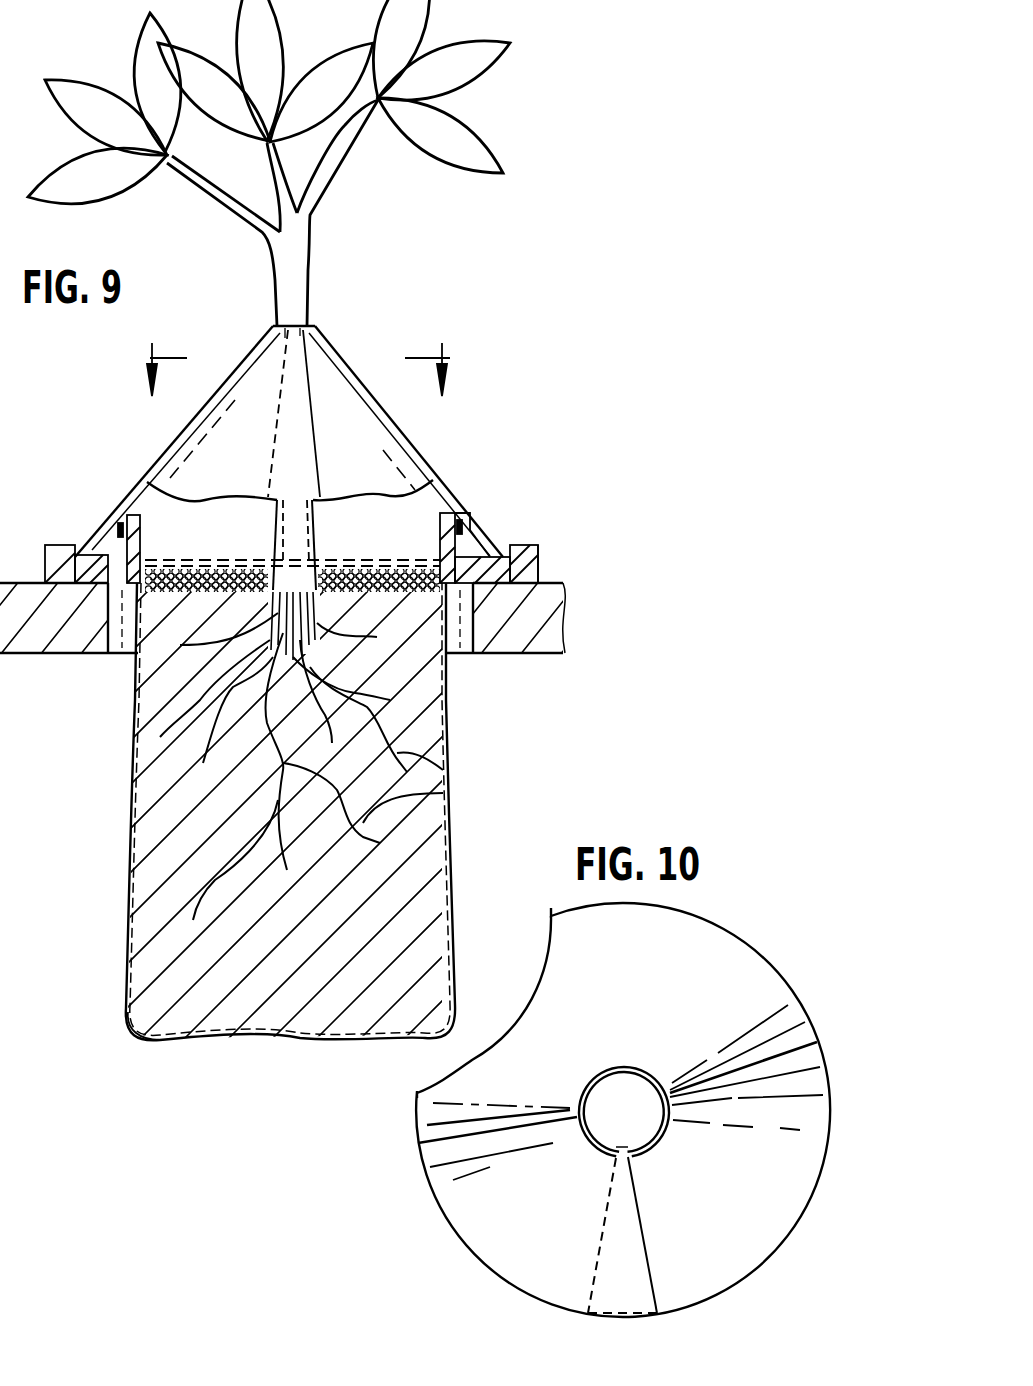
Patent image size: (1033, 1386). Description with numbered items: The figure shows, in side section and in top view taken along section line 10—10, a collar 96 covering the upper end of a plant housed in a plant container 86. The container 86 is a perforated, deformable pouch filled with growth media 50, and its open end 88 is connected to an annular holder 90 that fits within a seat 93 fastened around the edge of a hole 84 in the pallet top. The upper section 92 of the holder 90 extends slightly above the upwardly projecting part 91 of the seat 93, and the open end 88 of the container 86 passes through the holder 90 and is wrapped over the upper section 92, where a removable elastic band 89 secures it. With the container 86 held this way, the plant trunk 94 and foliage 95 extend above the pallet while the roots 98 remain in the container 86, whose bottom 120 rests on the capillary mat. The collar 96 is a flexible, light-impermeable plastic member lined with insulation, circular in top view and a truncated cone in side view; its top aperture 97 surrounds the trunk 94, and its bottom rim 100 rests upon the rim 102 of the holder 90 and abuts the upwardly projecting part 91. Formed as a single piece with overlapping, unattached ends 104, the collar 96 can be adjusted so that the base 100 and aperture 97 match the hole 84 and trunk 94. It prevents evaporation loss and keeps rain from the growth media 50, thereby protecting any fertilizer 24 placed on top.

In FIG. 9, the section line 10— 10 is at (295, 362).
In FIG. 9, the fertilizer 24 is at (228, 570).
In FIG. 9, the growth media 50 is at (185, 962).
In FIG. 9, the hole 84 is at (453, 655).
In FIG. 9, the plant container 86 is at (452, 705).
In FIG. 9, the open end 88 is at (133, 500).
In FIG. 9, the elastic band 89 is at (466, 528).
In FIG. 9, the annular holder 90 is at (430, 522).
In FIG. 9, the upwardly projecting part 91 is at (514, 545).
In FIG. 9, the upper section 92 is at (448, 553).
In FIG. 9, the seat 93 is at (552, 567).
In FIG. 9, the plant trunk 94 is at (276, 298).
In FIG. 9, the foliage 95 is at (478, 88).
In FIG. 9, the collar 96 is at (418, 440).
In FIG. 10, the collar 96 is at (404, 1141).
In FIG. 9, the top aperture 97 is at (302, 323).
In FIG. 10, the top aperture 97 is at (603, 1083).
In FIG. 9, the roots 98 is at (443, 793).
In FIG. 9, the bottom rim 100 is at (170, 562).
In FIG. 10, the bottom rim 100 is at (742, 940).
In FIG. 9, the rim 102 is at (484, 554).
In FIG. 9, the overlapping, unattached ends 104 is at (273, 410).
In FIG. 10, the overlapping, unattached ends 104 is at (597, 1253).
In FIG. 9, the bottom 120 is at (160, 1040).